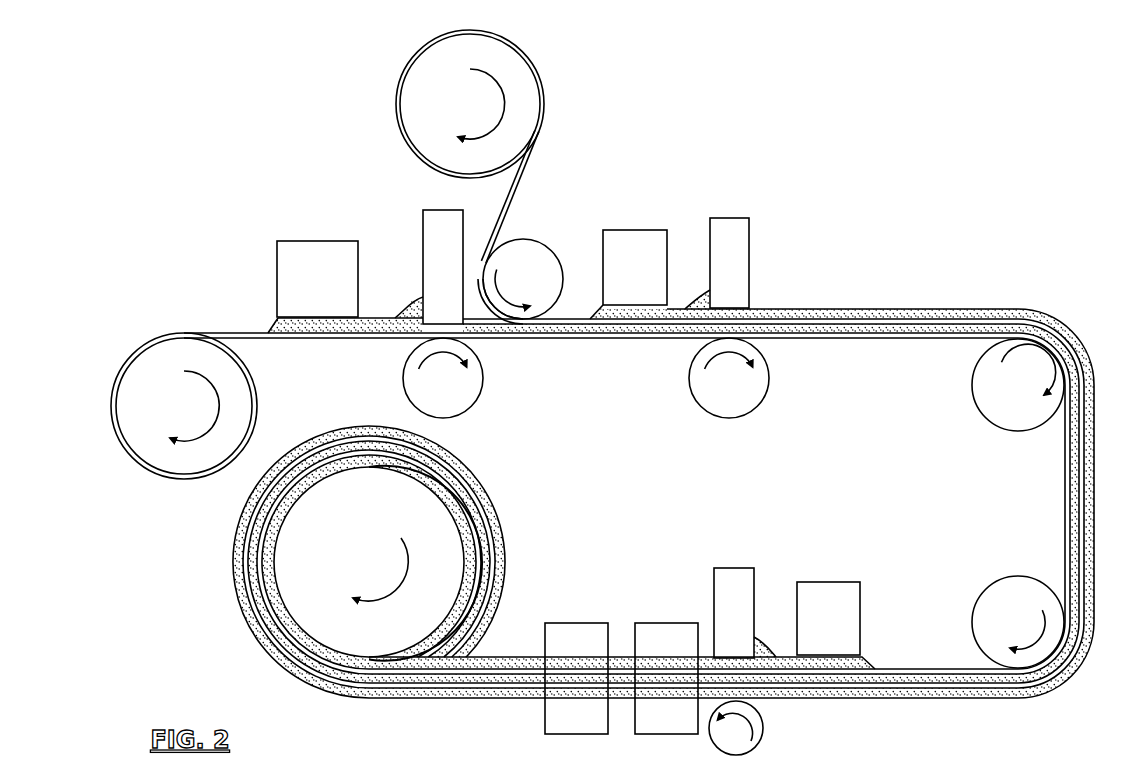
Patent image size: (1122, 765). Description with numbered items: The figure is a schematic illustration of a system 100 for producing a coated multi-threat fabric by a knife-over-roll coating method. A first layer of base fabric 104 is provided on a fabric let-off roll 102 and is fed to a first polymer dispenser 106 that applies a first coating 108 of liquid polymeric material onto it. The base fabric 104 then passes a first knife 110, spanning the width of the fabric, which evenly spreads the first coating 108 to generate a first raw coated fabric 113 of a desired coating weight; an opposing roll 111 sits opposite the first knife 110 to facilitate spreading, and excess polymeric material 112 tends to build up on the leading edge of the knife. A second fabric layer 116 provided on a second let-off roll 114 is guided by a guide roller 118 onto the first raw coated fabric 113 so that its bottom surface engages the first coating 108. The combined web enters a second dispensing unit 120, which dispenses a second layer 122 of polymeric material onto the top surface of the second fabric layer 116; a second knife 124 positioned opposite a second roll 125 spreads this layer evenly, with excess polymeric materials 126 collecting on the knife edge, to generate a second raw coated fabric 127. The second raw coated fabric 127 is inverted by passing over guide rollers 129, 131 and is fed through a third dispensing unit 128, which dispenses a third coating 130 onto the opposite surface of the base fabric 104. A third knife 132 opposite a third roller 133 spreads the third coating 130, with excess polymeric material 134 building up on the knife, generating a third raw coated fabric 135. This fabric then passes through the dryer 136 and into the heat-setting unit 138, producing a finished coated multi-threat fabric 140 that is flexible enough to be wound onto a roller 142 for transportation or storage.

The system 100 is at (224, 96).
The fabric let-off roll 102 is at (244, 398).
The base fabric 104 is at (222, 330).
The first polymer dispenser 106 is at (303, 250).
The first coating 108 is at (380, 326).
The first knife 110 is at (436, 218).
The opposing roll 111 is at (453, 385).
The excess polymeric material 112 is at (418, 305).
The first raw coated fabric 113 is at (490, 326).
The second let-off roll 114 is at (510, 62).
The second fabric layer 116 is at (526, 172).
The guide roller 118 is at (533, 246).
The second dispensing unit 120 is at (643, 240).
The second layer of polymeric material 122 is at (674, 310).
The second knife 124 is at (735, 222).
The second roll 125 is at (711, 385).
The excess polymeric materials 126 is at (700, 295).
The second raw coated fabric 127 is at (820, 304).
The third dispensing unit 128 is at (850, 605).
The guide roller 129 is at (990, 390).
The third coating 130 is at (876, 658).
The guide roller 131 is at (995, 592).
The third knife 132 is at (742, 575).
The third roller 133 is at (757, 742).
The excess polymeric material 134 is at (774, 640).
The third raw coated fabric 135 is at (707, 655).
The dryer 136 is at (655, 635).
The heat-setting unit 138 is at (578, 635).
The finished coated multi-threat fabric 140 is at (392, 675).
The roller 142 is at (312, 592).